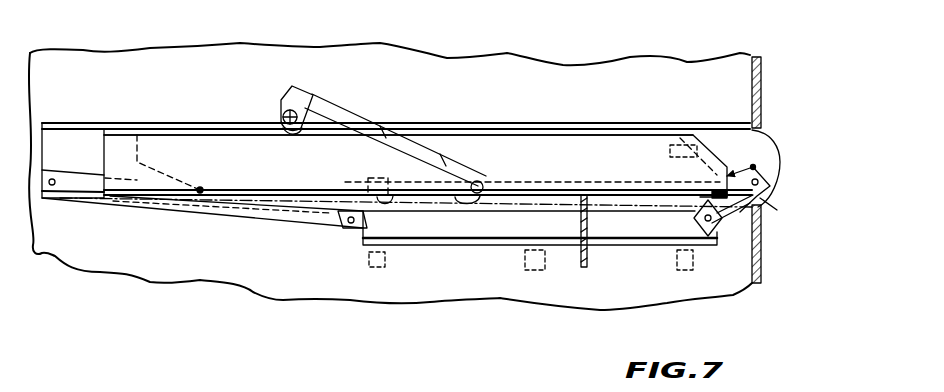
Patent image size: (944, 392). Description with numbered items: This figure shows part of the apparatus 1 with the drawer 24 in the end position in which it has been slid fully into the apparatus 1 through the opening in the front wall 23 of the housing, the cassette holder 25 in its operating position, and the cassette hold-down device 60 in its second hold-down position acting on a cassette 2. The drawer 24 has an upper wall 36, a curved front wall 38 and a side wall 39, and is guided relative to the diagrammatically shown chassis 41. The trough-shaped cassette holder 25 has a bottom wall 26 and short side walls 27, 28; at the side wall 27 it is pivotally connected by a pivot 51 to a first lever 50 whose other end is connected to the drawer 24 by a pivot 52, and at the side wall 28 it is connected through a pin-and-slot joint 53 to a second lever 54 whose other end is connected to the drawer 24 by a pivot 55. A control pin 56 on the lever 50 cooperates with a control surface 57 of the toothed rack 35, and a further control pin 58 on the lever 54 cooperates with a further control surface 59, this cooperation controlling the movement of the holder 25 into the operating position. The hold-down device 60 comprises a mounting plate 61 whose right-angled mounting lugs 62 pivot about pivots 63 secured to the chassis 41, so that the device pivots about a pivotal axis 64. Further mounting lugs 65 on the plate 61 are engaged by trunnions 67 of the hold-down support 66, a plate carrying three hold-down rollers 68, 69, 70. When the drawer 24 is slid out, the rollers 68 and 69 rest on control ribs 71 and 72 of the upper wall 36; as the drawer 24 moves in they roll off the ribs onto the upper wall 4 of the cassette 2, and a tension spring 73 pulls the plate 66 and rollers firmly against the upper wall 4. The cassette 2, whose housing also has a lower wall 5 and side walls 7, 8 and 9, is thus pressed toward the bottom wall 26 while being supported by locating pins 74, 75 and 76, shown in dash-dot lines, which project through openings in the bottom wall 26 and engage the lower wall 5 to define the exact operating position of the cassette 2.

The apparatus 1 is at (776, 116).
The cassette 2 is at (500, 222).
The upper wall 4 is at (541, 197).
The lower wall 5 is at (459, 246).
The side wall 7 is at (348, 212).
The side wall 8 is at (620, 248).
The side wall 9 is at (655, 248).
The front wall 23 is at (766, 97).
The drawer 24 is at (782, 148).
The cassette holder 25 is at (450, 251).
The bottom wall 26 is at (508, 246).
The side wall 27 is at (338, 236).
The side wall 28 is at (715, 250).
The toothed rack 35 is at (112, 147).
The upper wall 36 is at (80, 126).
The front wall 38 is at (782, 163).
The side wall 39 is at (50, 143).
The chassis 41 is at (101, 62).
The first lever 50 is at (264, 213).
The pivot 51 is at (322, 218).
The pivot 52 is at (62, 180).
The pin-and-slot joint 53 is at (734, 226).
The second lever 54 is at (770, 205).
The pivot 55 is at (753, 167).
The control pin 56 is at (202, 187).
The control surface 57 is at (146, 160).
The control pin 58 is at (723, 165).
The control surface 59 is at (696, 165).
The cassette hold-down device 60 is at (494, 160).
The mounting plate 61 is at (388, 118).
The mounting lugs 62 is at (281, 104).
The pivots 63 is at (297, 113).
The pivotal axis 64 is at (296, 133).
The mounting lugs 65 is at (496, 194).
The hold-down support 66 is at (614, 190).
The trunnions 67 is at (487, 178).
The hold-down roller 68 is at (662, 190).
The hold-down roller 69 is at (467, 185).
The hold-down roller 70 is at (386, 183).
The control rib 71 is at (263, 128).
The control rib 72 is at (215, 124).
The tension spring 73 is at (585, 212).
The locating pin 74 is at (372, 254).
The locating pin 75 is at (543, 252).
The locating pin 76 is at (684, 272).